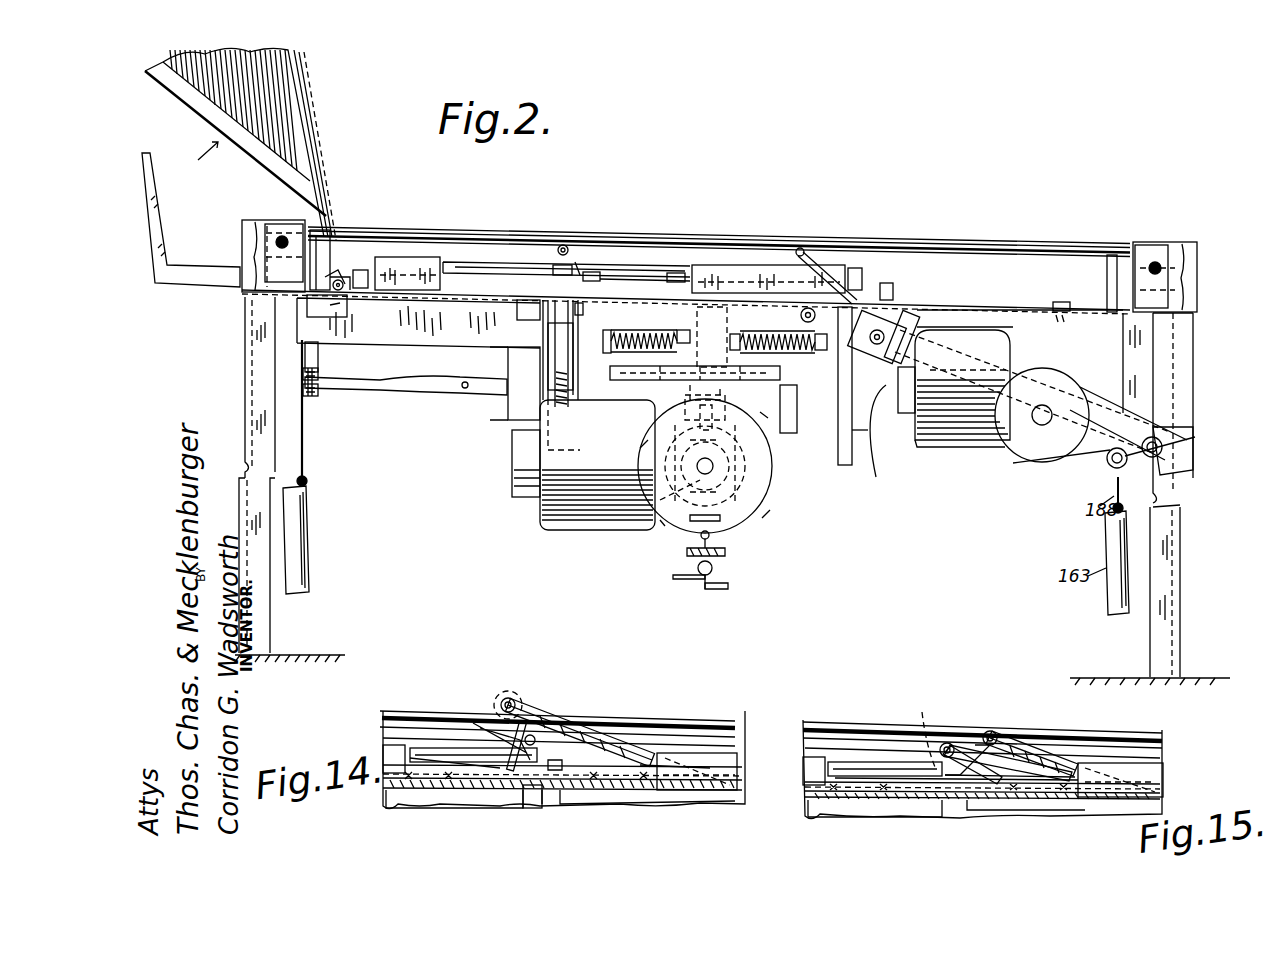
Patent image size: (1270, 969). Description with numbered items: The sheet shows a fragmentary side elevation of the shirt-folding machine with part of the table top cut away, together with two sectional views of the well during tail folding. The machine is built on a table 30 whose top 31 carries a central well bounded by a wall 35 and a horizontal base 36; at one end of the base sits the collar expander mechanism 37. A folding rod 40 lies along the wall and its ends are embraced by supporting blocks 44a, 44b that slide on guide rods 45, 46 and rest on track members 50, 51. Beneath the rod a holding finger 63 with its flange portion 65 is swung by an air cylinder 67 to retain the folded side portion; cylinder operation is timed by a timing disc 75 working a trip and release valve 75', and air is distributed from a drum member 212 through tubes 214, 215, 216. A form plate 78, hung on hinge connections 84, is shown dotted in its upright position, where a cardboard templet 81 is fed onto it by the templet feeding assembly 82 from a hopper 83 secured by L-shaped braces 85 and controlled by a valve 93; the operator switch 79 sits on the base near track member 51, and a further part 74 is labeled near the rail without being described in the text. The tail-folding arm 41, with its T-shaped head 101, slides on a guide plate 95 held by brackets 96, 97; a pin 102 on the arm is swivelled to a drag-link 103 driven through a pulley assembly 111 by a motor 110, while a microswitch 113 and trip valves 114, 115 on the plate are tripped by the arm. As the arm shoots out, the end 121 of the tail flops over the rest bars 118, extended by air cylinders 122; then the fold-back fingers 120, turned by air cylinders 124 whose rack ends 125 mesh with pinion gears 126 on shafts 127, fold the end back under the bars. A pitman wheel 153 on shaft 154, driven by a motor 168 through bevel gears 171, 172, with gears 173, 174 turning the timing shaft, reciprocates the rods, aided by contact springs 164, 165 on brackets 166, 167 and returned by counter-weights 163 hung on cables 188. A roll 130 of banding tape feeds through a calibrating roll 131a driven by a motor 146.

In FIG. 2, the table 30 is at (1190, 544).
In FIG. 2, the table top 31 is at (1017, 233).
In FIG. 14, the table top 31 is at (664, 708).
In FIG. 15, the table top 31 is at (857, 716).
In FIG. 2, the well wall 35 is at (700, 240).
In FIG. 14, the well wall 35 is at (712, 722).
In FIG. 15, the well wall 35 is at (885, 726).
In FIG. 2, the well base 36 is at (455, 305).
In FIG. 14, the well base 36 is at (598, 792).
In FIG. 15, the well base 36 is at (1042, 802).
In FIG. 2, the collar expander mechanism 37 is at (478, 332).
In FIG. 14, the collar expander mechanism 37 is at (436, 794).
In FIG. 15, the collar expander mechanism 37 is at (856, 805).
In FIG. 2, the folding rod 40 is at (492, 262).
In FIG. 14, the folding rod 40 is at (418, 716).
In FIG. 15, the folding rod 40 is at (1090, 736).
In FIG. 2, the tail-folding arm 41 is at (845, 260).
In FIG. 14, the tail-folding arm 41 is at (600, 740).
In FIG. 15, the tail-folding arm 41 is at (1016, 746).
In FIG. 2, the supporting block 44a is at (284, 222).
In FIG. 2, the supporting block 44b is at (1155, 247).
In FIG. 2, the guide rod 45 is at (278, 243).
In FIG. 2, the guide rod 46 is at (1175, 268).
In FIG. 2, the track member 50 is at (333, 255).
In FIG. 2, the track member 51 is at (1105, 285).
In FIG. 2, the holding finger 63 is at (396, 248).
In FIG. 14, the holding finger 63 is at (390, 744).
In FIG. 15, the holding finger 63 is at (806, 768).
In FIG. 2, the flange portion 65 is at (410, 262).
In FIG. 2, the air cylinder 67 is at (876, 410).
In FIG. 2, the stop 74 is at (886, 283).
In FIG. 2, the timing disc 75 is at (725, 459).
In FIG. 2, the trip and release valve 75' is at (734, 547).
In FIG. 2, the form plate 78 is at (322, 136).
In FIG. 2, the operator switch 79 is at (1058, 302).
In FIG. 2, the cardboard templet 81 is at (282, 108).
In FIG. 2, the templet feeding assembly 82 is at (199, 154).
In FIG. 2, the hopper 83 is at (190, 104).
In FIG. 2, the hinge connections 84 is at (343, 296).
In FIG. 2, the L-shaped braces 85 is at (201, 277).
In FIG. 2, the valve 93 is at (334, 292).
In FIG. 2, the guide plate 95 is at (912, 322).
In FIG. 2, the bracket 96 is at (882, 318).
In FIG. 2, the bracket 97 is at (1195, 382).
In FIG. 2, the head 101 is at (805, 252).
In FIG. 14, the head 101 is at (516, 697).
In FIG. 2, the pin 102 is at (1170, 430).
In FIG. 2, the drag-link 103 is at (1108, 462).
In FIG. 2, the motor 110 is at (966, 444).
In FIG. 2, the pulley assembly 111 is at (1030, 458).
In FIG. 2, the microswitch 113 is at (1080, 390).
In FIG. 2, the trip valve 114 is at (955, 396).
In FIG. 2, the trip valve 115 is at (922, 446).
In FIG. 2, the rest bars 118 is at (578, 262).
In FIG. 14, the rest bars 118 is at (536, 736).
In FIG. 15, the rest bars 118 is at (947, 742).
In FIG. 2, the fold-back fingers 120 is at (503, 266).
In FIG. 14, the fold-back fingers 120 is at (445, 750).
In FIG. 15, the fold-back fingers 120 is at (885, 769).
In FIG. 14, the end of tail portion 121 is at (483, 722).
In FIG. 15, the end of tail portion 121 is at (957, 768).
In FIG. 2, the air cylinders 122 is at (560, 246).
In FIG. 2, the air cylinders 124 is at (634, 262).
In FIG. 14, the air cylinders 124 is at (560, 775).
In FIG. 14, the piston rod ends 125 is at (518, 800).
In FIG. 15, the pinion gear 126 is at (934, 729).
In FIG. 2, the shaft 127 is at (596, 262).
In FIG. 2, the roll of banding tape 130 is at (570, 392).
In FIG. 2, the calibrating feed roll 131a is at (580, 312).
In FIG. 2, the motor 146 is at (517, 306).
In FIG. 2, the pitman wheel 153 is at (742, 334).
In FIG. 2, the shaft 154 is at (696, 392).
In FIG. 2, the counter-weights 163 is at (310, 546).
In FIG. 2, the contact spring 164 is at (800, 316).
In FIG. 2, the contact spring 165 is at (645, 330).
In FIG. 2, the bracket 166 is at (780, 376).
In FIG. 2, the bracket 167 is at (612, 352).
In FIG. 2, the motor 168 is at (578, 530).
In FIG. 2, the bevel gear 171 is at (728, 405).
In FIG. 2, the bevel gear 172 is at (690, 436).
In FIG. 2, the bevel gear 173 is at (760, 518).
In FIG. 2, the bevel gear 174 is at (680, 512).
In FIG. 2, the cables 188 is at (304, 440).
In FIG. 2, the drum member 212 is at (712, 570).
In FIG. 2, the tube 214 is at (720, 590).
In FIG. 2, the tube 215 is at (870, 470).
In FIG. 2, the tube 216 is at (682, 582).